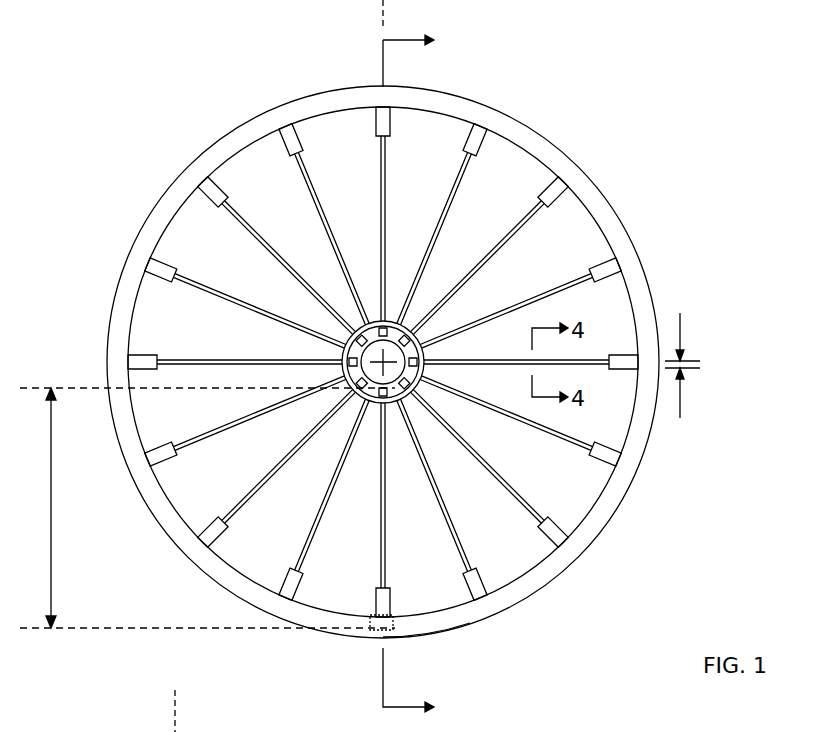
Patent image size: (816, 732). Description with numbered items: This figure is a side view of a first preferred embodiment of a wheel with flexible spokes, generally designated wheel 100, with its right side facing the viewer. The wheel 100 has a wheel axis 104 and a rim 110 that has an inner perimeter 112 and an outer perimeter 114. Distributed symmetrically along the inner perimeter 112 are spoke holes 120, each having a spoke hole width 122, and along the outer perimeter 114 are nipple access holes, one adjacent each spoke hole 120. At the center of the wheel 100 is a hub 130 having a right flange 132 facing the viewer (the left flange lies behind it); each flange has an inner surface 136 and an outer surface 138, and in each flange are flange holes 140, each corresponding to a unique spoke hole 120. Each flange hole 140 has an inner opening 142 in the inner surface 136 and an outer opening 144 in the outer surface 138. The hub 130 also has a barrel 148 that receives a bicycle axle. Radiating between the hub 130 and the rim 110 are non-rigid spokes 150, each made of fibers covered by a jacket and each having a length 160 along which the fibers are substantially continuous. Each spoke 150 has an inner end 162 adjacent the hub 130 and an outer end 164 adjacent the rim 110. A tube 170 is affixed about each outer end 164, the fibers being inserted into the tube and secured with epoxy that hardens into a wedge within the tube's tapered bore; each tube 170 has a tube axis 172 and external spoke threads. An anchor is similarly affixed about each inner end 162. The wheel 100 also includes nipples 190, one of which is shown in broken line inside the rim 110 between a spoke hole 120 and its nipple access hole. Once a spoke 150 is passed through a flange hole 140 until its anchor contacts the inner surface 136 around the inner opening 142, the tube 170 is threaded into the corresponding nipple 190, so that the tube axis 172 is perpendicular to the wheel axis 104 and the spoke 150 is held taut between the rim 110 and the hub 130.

The wheel 100 is at (669, 142).
The wheel axis 104 is at (397, 330).
The rim 110 is at (170, 201).
The inner perimeter 112 is at (563, 210).
The outer perimeter 114 is at (640, 270).
The spoke hole 120 is at (390, 615).
The spoke hole width 122 is at (680, 326).
The hub 130 is at (336, 290).
The right flange 132 is at (347, 337).
The inner surface 136 is at (378, 338).
The outer surface 138 is at (410, 390).
The flange hole 140 is at (347, 347).
The inner opening 142 is at (391, 400).
The outer opening 144 is at (410, 393).
The barrel 148 is at (415, 337).
The spoke 150 is at (327, 488).
The length 160 is at (51, 572).
The inner end 162 is at (423, 375).
The outer end 164 is at (580, 450).
The tube 170 is at (560, 542).
The tube axis 172 is at (377, 5).
The nipple 190 is at (382, 648).